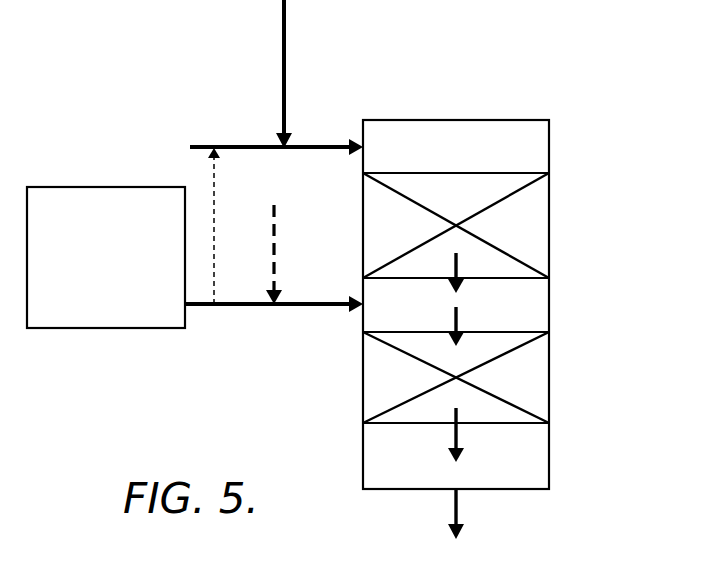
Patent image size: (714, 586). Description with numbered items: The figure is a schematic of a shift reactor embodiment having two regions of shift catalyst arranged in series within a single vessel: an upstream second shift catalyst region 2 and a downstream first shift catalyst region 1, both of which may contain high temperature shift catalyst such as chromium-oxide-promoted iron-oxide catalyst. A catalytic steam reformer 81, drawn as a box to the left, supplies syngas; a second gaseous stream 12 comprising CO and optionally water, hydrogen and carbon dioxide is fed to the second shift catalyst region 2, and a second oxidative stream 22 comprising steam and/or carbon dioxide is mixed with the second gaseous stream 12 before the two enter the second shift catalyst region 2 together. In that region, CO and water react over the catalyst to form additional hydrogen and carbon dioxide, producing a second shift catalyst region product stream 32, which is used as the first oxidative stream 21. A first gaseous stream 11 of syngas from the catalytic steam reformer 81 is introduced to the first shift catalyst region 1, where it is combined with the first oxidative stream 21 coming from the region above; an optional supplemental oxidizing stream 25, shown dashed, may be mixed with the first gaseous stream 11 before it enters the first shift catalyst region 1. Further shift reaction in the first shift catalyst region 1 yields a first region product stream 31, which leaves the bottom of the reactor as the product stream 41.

The first shift catalyst region 1 is at (536, 385).
The second shift catalyst region 2 is at (536, 238).
The first gaseous stream 11 is at (258, 307).
The second gaseous stream 12 is at (241, 144).
The first oxidative stream 21 is at (458, 317).
The second oxidative stream 22 is at (287, 68).
The supplemental oxidizing stream 25 is at (276, 258).
The first region product stream 31 is at (458, 435).
The second shift catalyst region product stream 32 is at (458, 265).
The product stream 41 is at (458, 512).
The catalytic steam reformer 81 is at (119, 280).